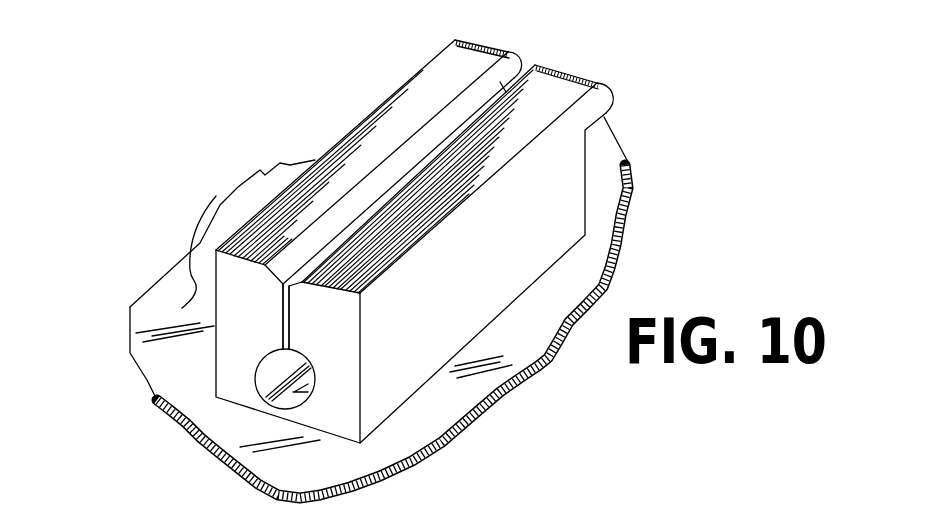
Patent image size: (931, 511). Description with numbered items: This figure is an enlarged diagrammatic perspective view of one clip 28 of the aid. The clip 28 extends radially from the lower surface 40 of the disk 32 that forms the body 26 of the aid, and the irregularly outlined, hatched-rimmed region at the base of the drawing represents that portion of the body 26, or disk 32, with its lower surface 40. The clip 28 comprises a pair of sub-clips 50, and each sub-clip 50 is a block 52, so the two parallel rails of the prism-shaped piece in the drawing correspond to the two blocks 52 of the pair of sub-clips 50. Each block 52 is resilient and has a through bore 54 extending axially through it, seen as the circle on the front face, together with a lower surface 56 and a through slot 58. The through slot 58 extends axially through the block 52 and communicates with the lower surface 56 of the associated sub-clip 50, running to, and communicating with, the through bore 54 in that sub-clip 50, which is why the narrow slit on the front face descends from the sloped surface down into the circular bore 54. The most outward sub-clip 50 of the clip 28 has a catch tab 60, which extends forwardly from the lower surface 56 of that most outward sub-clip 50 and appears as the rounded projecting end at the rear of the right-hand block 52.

The body 26 is at (135, 382).
The disk 32 is at (367, 314).
The lower surface 40 is at (187, 297).
The sub-clip 50 is at (320, 153).
The block 52 is at (370, 228).
The clip 28 is at (364, 116).
The lower surface 56 is at (454, 182).
The through slot 58 is at (285, 316).
The through bore 54 is at (307, 363).
The catch tab 60 is at (577, 73).